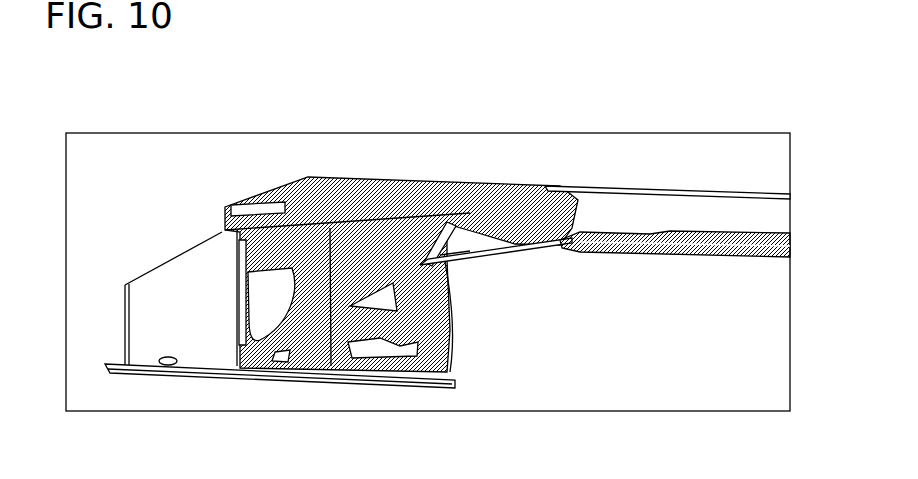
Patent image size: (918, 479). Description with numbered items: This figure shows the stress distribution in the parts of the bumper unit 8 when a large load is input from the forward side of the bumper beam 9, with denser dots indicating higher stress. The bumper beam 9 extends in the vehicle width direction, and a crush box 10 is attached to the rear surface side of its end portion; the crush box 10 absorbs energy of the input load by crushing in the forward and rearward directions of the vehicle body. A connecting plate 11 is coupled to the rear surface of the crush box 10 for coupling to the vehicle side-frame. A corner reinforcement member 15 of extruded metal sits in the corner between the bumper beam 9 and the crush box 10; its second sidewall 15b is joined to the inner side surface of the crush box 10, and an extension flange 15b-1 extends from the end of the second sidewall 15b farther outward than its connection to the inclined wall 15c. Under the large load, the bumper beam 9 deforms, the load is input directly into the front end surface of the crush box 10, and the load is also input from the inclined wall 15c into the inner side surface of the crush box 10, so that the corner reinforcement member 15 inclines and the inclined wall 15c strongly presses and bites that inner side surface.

The bumper unit 8 is at (672, 178).
The bumper beam 9 is at (733, 193).
The crush box 10 is at (166, 258).
The connecting plate 11 is at (323, 383).
The corner reinforcement member 15 is at (478, 258).
The second sidewall 15b is at (440, 238).
The extension flange 15b-1 is at (420, 262).
The inclined wall 15c is at (462, 250).